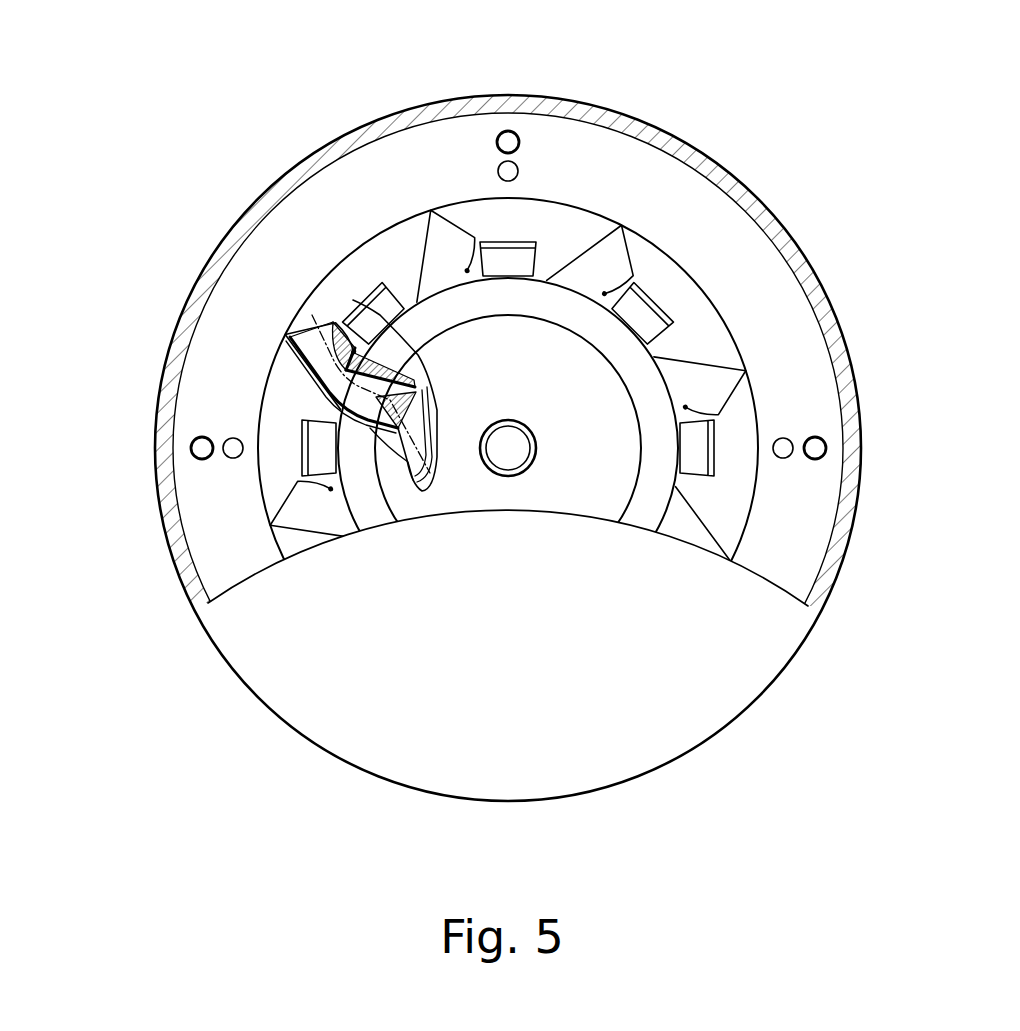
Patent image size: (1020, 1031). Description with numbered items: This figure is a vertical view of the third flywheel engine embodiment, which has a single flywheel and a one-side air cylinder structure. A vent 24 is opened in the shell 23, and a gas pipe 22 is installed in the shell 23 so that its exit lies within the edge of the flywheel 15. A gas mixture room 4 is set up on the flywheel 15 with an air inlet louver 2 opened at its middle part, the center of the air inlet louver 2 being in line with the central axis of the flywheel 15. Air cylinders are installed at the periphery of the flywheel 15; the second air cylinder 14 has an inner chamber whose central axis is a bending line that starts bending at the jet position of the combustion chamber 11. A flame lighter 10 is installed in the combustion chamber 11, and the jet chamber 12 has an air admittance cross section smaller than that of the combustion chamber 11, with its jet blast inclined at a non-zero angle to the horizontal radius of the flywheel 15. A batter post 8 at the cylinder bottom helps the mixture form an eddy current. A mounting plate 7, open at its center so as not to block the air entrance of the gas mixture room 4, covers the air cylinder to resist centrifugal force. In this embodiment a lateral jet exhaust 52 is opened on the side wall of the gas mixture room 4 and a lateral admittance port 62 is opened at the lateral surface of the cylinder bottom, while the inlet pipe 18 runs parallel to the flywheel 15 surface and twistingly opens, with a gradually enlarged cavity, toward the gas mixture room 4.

The air inlet louver 2 is at (508, 448).
The gas mixture room 4 is at (432, 480).
The mounting plate 7 is at (523, 298).
The batter post 8 is at (393, 396).
The flame lighter 10 is at (355, 349).
The combustion chamber 11 is at (323, 387).
The jet chamber 12 is at (327, 329).
The second air cylinder 14 is at (335, 323).
The flywheel 15 is at (568, 233).
The inlet pipe 18 is at (392, 443).
The gas pipe 22 is at (817, 450).
The shell 23 is at (372, 635).
The vent 24 is at (786, 449).
The lateral jet exhaust 52 is at (415, 460).
The lateral admittance port 62 is at (382, 428).